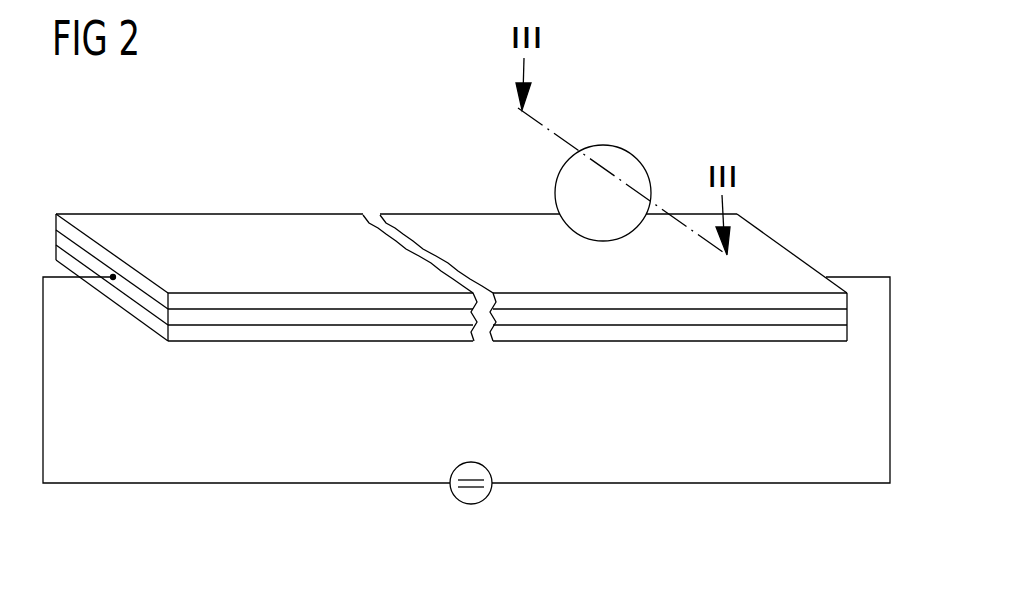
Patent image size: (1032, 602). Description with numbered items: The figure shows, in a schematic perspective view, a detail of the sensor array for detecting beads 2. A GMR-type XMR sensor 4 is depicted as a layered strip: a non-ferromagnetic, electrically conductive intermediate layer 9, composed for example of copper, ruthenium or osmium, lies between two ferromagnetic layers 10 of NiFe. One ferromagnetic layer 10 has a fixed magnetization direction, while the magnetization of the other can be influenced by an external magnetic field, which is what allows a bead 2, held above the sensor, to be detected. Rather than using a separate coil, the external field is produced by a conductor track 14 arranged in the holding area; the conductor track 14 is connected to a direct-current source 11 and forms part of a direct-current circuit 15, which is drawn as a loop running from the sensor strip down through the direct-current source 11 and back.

The bead 2 is at (563, 190).
The XMR sensor 4 is at (451, 278).
The conductor track 14 is at (245, 225).
The intermediate layer 9 is at (280, 317).
The ferromagnetic layer 10 is at (230, 332).
The direct-current source 11 is at (470, 505).
The direct-current circuit 15 is at (592, 488).